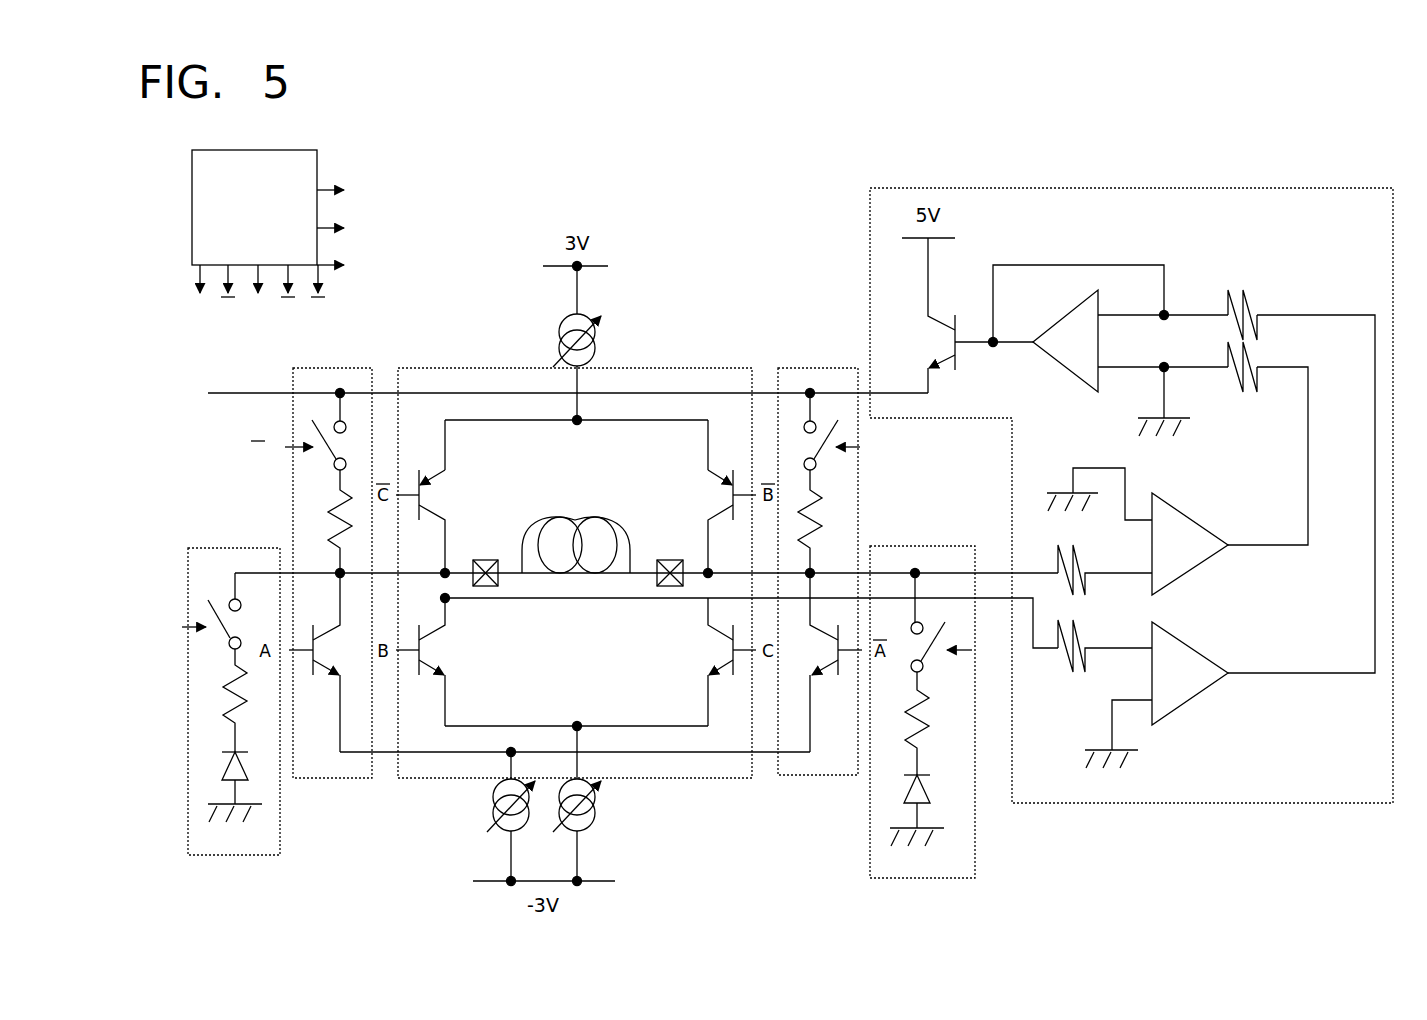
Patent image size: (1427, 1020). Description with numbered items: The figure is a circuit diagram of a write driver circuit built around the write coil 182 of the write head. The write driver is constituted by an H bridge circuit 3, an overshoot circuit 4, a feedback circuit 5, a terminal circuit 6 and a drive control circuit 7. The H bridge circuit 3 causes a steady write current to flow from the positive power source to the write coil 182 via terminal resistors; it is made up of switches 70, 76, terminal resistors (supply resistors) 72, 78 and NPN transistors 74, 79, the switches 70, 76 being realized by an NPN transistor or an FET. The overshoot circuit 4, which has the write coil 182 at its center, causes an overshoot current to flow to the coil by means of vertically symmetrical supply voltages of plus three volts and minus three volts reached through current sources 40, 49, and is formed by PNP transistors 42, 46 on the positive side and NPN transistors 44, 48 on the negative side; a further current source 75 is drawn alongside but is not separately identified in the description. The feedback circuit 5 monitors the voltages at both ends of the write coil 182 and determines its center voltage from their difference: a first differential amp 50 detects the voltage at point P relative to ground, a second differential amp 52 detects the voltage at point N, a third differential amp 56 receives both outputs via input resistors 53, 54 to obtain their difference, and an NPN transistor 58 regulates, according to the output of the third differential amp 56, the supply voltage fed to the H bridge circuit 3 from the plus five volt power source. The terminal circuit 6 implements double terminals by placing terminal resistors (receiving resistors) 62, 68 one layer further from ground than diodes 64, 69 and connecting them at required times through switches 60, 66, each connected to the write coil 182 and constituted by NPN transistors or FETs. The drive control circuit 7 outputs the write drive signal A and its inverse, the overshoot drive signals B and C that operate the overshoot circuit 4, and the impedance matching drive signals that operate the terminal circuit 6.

The H bridge circuit 3 is at (346, 368).
The overshoot circuit 4 is at (648, 368).
The feedback circuit 5 is at (1278, 803).
The terminal circuit 6 is at (200, 856).
The drive control circuit 7 is at (290, 190).
The current source 40 is at (553, 326).
The PNP transistor 42 is at (452, 493).
The NPN transistor 44 is at (455, 648).
The PNP transistor 46 is at (712, 488).
The NPN transistor 48 is at (703, 648).
The current source 49 is at (607, 823).
The first differential amp 50 is at (1200, 688).
The second differential amp 52 is at (1212, 555).
The input resistor 53 is at (1240, 400).
The input resistor 54 is at (1240, 290).
The third differential amp 56 is at (1068, 366).
The NPN transistor 58 is at (942, 303).
The switch 60 is at (195, 598).
The terminal resistor 62 is at (210, 745).
The diode 64 is at (222, 765).
The switch 66 is at (943, 669).
The terminal resistor 68 is at (932, 745).
The diode 69 is at (933, 792).
The switch 70 is at (325, 464).
The terminal resistor 72 is at (325, 508).
The NPN transistor 74 is at (330, 680).
The current source 75 is at (482, 805).
The switch 76 is at (828, 453).
The terminal resistor 78 is at (828, 505).
The NPN transistor 79 is at (828, 680).
The write coil 182 is at (537, 523).